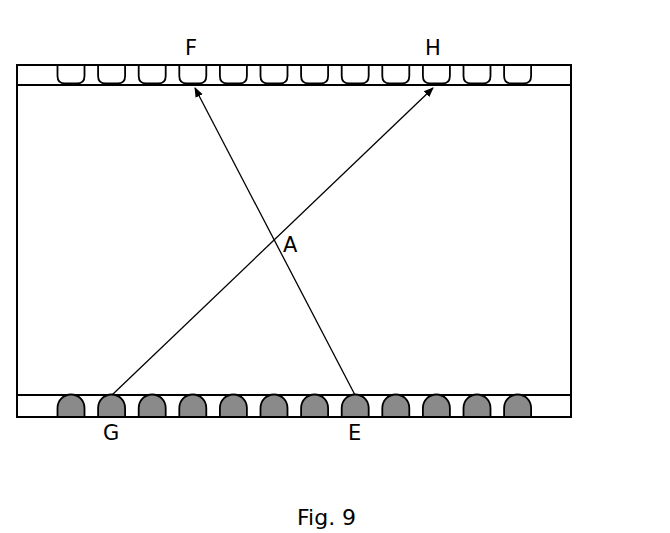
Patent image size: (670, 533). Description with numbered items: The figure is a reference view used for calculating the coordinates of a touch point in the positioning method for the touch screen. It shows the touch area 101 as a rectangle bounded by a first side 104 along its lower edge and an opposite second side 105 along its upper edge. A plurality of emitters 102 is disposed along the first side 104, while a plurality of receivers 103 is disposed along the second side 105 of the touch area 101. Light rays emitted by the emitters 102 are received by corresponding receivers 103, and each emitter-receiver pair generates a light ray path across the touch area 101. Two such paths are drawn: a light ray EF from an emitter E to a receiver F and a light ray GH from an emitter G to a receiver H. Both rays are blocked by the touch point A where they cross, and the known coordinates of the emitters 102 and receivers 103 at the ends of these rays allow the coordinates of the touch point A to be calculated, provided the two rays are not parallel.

The touch area 101 is at (545, 254).
The emitters 102 is at (518, 405).
The receivers 103 is at (517, 72).
The first side 104 is at (33, 418).
The second side 105 is at (40, 72).